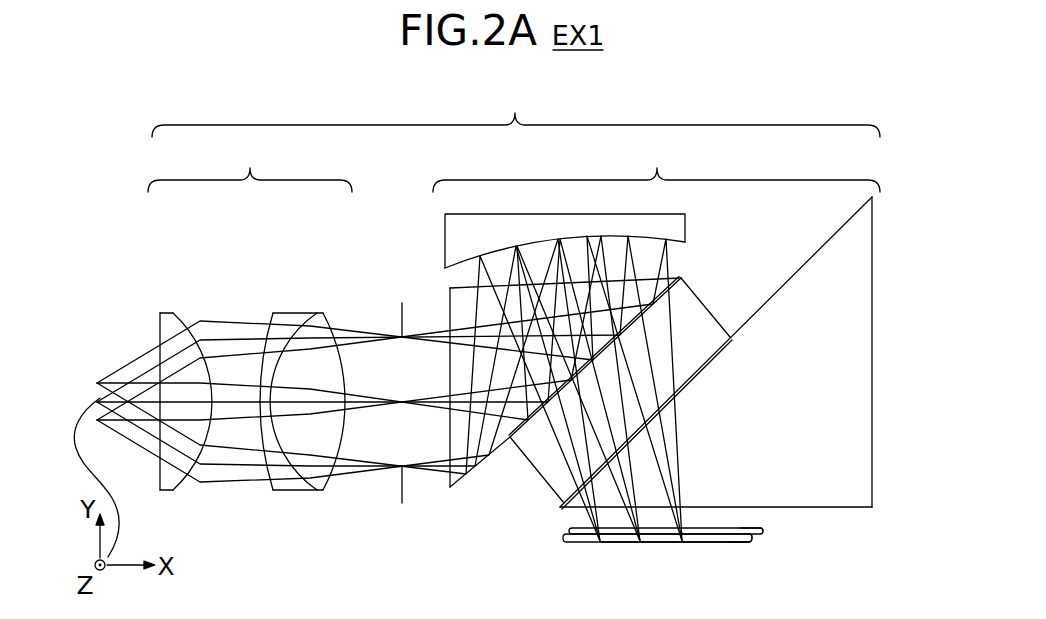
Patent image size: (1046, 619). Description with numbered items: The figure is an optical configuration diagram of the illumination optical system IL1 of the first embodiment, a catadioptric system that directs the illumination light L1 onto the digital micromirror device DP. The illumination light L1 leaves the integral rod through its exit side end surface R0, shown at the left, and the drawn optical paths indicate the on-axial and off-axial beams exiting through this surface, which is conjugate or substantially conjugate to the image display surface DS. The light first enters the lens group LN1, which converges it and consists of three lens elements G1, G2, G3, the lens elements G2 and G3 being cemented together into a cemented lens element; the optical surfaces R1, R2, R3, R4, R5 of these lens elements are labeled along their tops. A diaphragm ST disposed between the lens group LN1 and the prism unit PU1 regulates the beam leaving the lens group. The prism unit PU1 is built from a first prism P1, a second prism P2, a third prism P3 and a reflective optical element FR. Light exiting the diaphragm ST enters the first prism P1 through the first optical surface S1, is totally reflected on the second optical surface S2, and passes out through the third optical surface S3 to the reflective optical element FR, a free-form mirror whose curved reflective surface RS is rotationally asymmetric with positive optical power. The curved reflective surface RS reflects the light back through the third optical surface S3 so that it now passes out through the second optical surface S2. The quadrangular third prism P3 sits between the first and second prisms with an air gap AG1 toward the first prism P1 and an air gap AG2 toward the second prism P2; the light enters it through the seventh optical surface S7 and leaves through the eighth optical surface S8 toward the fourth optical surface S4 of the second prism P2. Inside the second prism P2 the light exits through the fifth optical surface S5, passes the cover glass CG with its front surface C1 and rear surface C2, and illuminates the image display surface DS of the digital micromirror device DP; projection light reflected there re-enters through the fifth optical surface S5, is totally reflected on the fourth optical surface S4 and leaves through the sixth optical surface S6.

The illumination optical system IL1 is at (516, 109).
The lens group LN1 is at (250, 164).
The prism unit PU1 is at (656, 164).
The illumination light L1 is at (134, 346).
The exit side end surface R0 is at (95, 362).
The optical surface R1 is at (157, 324).
The optical surface R2 is at (183, 324).
The optical surface R3 is at (273, 324).
The optical surface R4 is at (298, 322).
The optical surface R5 is at (330, 324).
The lens element G1 is at (169, 401).
The lens element G2 is at (284, 401).
The lens element G3 is at (339, 401).
The diaphragm ST is at (405, 390).
The reflective optical element FR is at (568, 233).
The curved reflective surface RS is at (692, 245).
The first prism P1 is at (568, 406).
The first optical surface S1 is at (449, 487).
The second optical surface S2 is at (464, 478).
The third optical surface S3 is at (675, 278).
The seventh optical surface S7 is at (507, 443).
The third prism P3 is at (638, 407).
The eighth optical surface S8 is at (728, 338).
The second prism P2 is at (743, 396).
The fourth optical surface S4 is at (823, 243).
The fifth optical surface S5 is at (850, 509).
The sixth optical surface S6 is at (875, 452).
The air gap AG1 is at (674, 302).
The air gap AG2 is at (700, 385).
The cover glass CG is at (569, 531).
The front surface of cover glass C1 is at (762, 528).
The rear surface of cover glass C2 is at (752, 543).
The digital micromirror device DP is at (684, 582).
The image display surface DS is at (733, 543).